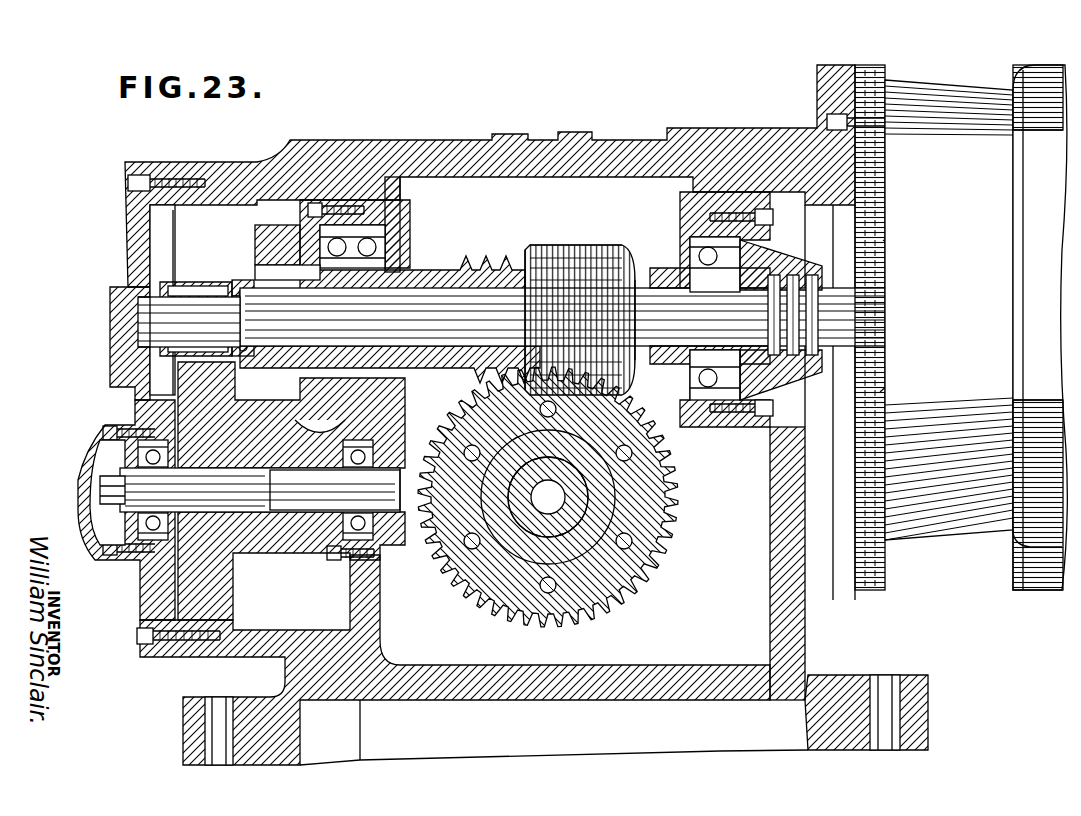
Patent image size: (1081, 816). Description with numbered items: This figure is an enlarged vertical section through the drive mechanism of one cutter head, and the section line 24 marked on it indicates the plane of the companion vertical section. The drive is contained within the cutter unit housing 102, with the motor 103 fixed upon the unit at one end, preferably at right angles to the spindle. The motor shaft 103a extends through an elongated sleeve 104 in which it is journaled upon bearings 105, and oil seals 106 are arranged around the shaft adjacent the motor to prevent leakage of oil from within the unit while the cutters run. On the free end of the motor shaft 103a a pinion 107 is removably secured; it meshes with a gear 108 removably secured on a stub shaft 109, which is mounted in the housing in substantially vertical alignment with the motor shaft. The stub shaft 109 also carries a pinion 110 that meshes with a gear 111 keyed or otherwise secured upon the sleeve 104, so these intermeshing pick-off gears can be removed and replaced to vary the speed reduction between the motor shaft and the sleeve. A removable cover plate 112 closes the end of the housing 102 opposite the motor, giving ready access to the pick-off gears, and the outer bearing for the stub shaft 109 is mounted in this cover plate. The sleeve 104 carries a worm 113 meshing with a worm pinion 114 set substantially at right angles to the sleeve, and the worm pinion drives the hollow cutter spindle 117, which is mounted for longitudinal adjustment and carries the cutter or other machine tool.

The section line 24- 24 is at (513, 78).
The cutter unit housing 102 is at (710, 143).
The motor 103 is at (1005, 515).
The motor shaft 103a is at (500, 305).
The elongated sleeve 104 is at (428, 285).
The bearings 105 is at (229, 278).
The oil seals 106 is at (803, 268).
The pinion 107 is at (198, 268).
The gear 108 is at (137, 395).
The stub shaft 109 is at (137, 483).
The pinion 110 is at (288, 548).
The gear 111 is at (287, 210).
The removable cover plate 112 is at (140, 593).
The worm 113 is at (612, 254).
The worm pinion 114 is at (673, 505).
The cutter spindle 117 is at (523, 527).